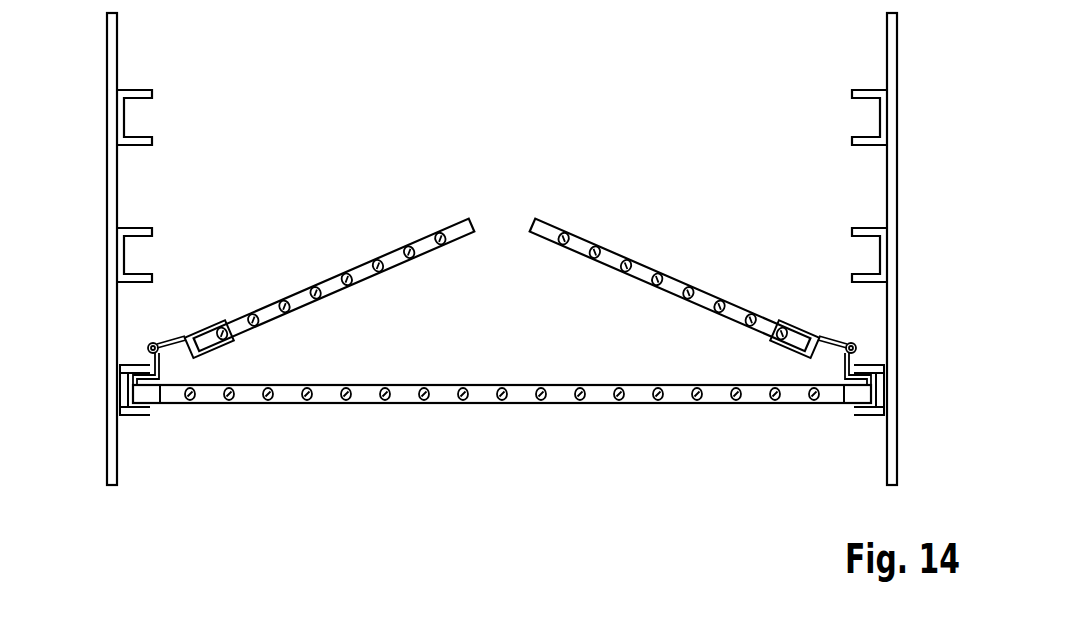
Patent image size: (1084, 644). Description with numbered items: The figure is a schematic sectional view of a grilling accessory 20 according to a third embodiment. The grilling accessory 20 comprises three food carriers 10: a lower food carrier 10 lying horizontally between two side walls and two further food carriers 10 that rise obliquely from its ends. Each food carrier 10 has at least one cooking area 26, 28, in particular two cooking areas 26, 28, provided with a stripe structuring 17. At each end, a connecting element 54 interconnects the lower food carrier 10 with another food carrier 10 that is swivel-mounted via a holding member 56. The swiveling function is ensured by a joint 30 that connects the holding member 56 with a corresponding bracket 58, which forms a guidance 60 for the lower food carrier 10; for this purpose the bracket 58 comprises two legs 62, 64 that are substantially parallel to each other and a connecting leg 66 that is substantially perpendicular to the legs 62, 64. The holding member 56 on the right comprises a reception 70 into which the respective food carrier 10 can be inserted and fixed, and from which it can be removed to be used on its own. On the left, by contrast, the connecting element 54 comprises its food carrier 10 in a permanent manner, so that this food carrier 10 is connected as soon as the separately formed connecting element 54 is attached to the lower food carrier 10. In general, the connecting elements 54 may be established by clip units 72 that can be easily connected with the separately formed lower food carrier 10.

The food carrier 10 is at (368, 262).
The stripe structuring 17 is at (321, 279).
The grilling accessory 20 is at (259, 226).
The cooking area 26 is at (372, 286).
The cooking area 28 is at (425, 230).
The joint 30 is at (149, 344).
The connecting element 54 is at (502, 431).
The holding member 56 is at (502, 318).
The bracket 58 is at (115, 399).
The guidance 60 is at (168, 413).
The leg 62 is at (133, 366).
The leg 64 is at (139, 420).
The connecting leg 66 is at (122, 381).
The reception 70 is at (781, 355).
The clip unit 72 is at (173, 313).